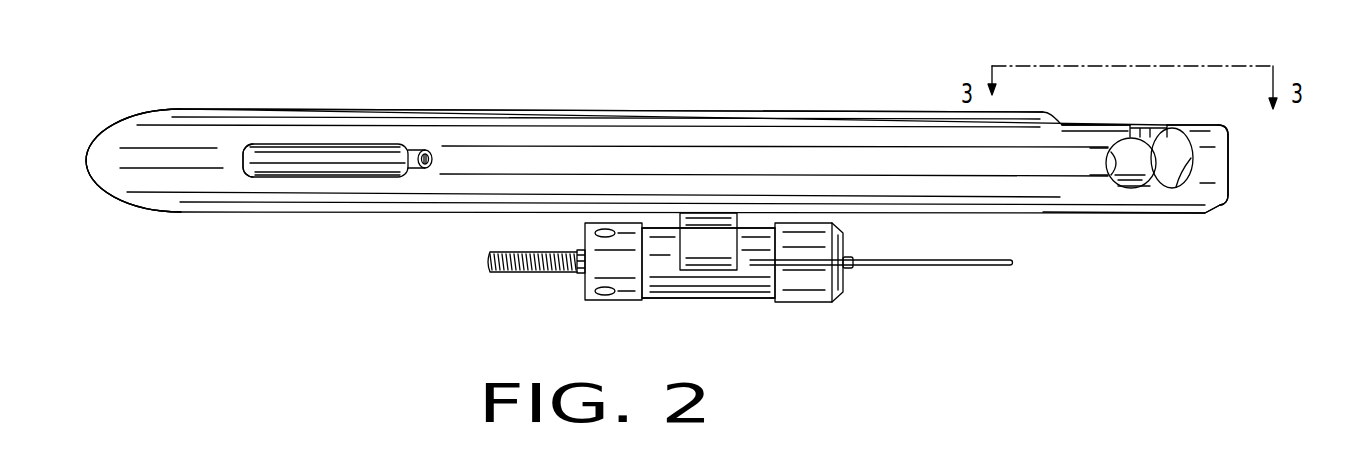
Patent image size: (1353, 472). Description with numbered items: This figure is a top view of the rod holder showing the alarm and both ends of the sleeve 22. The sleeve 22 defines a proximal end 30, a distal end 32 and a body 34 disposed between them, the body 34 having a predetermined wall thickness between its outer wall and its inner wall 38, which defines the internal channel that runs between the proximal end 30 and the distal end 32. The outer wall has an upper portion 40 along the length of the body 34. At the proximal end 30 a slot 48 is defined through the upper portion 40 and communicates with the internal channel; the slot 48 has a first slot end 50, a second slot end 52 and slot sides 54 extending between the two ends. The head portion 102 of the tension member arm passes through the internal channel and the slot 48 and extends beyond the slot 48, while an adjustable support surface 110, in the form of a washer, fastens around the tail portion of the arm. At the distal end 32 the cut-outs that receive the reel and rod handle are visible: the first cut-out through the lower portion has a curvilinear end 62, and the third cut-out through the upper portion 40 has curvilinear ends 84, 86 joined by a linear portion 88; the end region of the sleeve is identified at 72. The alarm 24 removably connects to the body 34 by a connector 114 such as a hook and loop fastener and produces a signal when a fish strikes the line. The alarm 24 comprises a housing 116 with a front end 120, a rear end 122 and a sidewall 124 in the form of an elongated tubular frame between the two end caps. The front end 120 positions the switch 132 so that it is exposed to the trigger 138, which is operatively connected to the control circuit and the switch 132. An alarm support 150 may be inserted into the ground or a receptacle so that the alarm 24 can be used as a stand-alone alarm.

The sleeve 22 is at (727, 82).
The alarm 24 is at (662, 316).
The proximal end 30 is at (271, 234).
The distal end 32 is at (1139, 240).
The body 34 is at (598, 110).
The inner wall 38 is at (1167, 128).
The upper portion 40 is at (838, 155).
The slot 48 is at (293, 145).
The first slot end 50 is at (243, 158).
The second slot end 52 is at (407, 176).
The slot sides 54 is at (360, 147).
The curvilinear end 62 is at (1129, 158).
The end wall 72 is at (1228, 167).
The curvilinear end 84 is at (1180, 167).
The curvilinear end 86 is at (1107, 166).
The linear portion 88 is at (1137, 190).
The head portion 102 is at (415, 150).
The adjustable support surface 110 is at (86, 152).
The connector 114 is at (722, 260).
The housing 116 is at (687, 298).
The front end 120 is at (818, 302).
The rear end 122 is at (607, 300).
The sidewall 124 is at (707, 288).
The switch 132 is at (850, 257).
The trigger 138 is at (968, 270).
The alarm support 150 is at (487, 262).